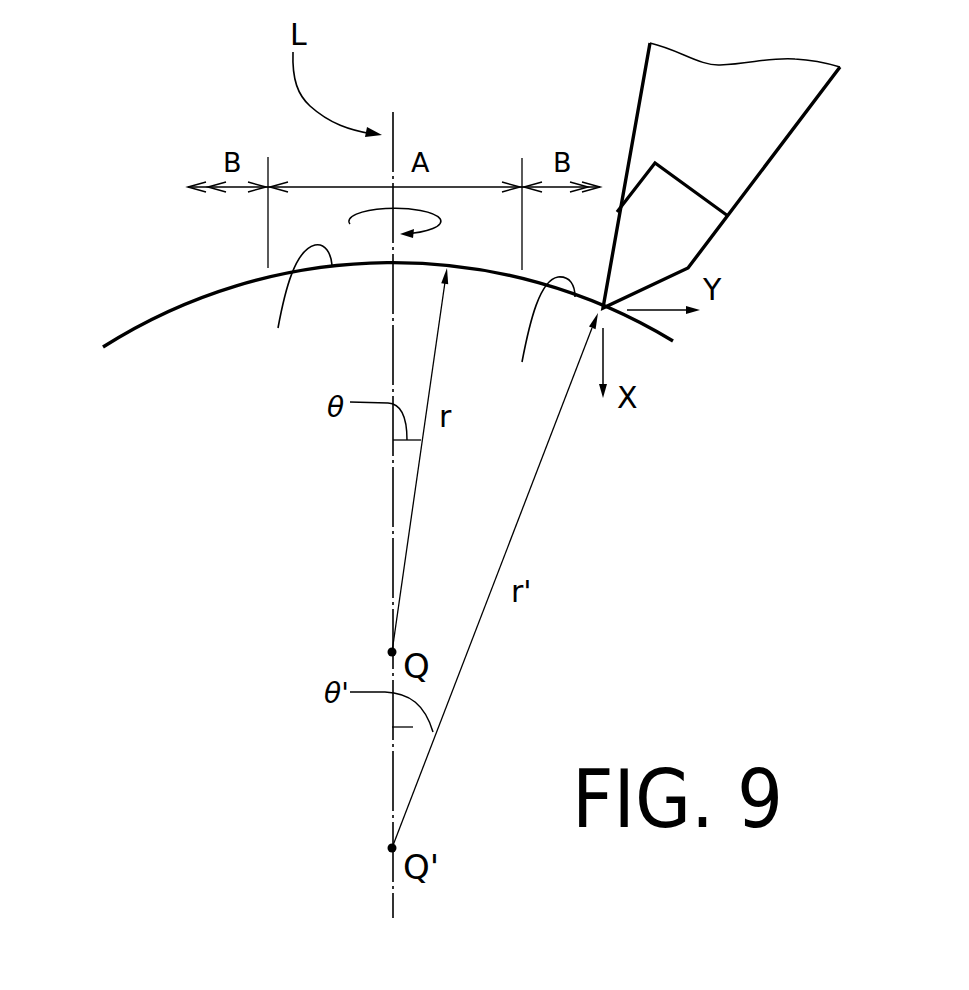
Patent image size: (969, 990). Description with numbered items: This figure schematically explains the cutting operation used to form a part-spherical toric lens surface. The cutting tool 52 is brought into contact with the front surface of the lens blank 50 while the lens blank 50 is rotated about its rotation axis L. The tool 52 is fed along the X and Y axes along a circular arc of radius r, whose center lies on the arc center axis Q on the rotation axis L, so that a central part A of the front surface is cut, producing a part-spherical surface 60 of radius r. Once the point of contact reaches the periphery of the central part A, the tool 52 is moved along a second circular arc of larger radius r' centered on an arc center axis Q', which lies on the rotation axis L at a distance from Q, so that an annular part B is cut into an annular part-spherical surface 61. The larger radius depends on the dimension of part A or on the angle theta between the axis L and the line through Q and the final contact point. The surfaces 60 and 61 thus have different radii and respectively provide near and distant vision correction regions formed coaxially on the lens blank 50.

The lens blank 50 is at (158, 292).
The cutting tool 52 is at (697, 249).
The part-spherical surface 60 is at (297, 309).
The annular part-spherical surface 61 is at (539, 341).